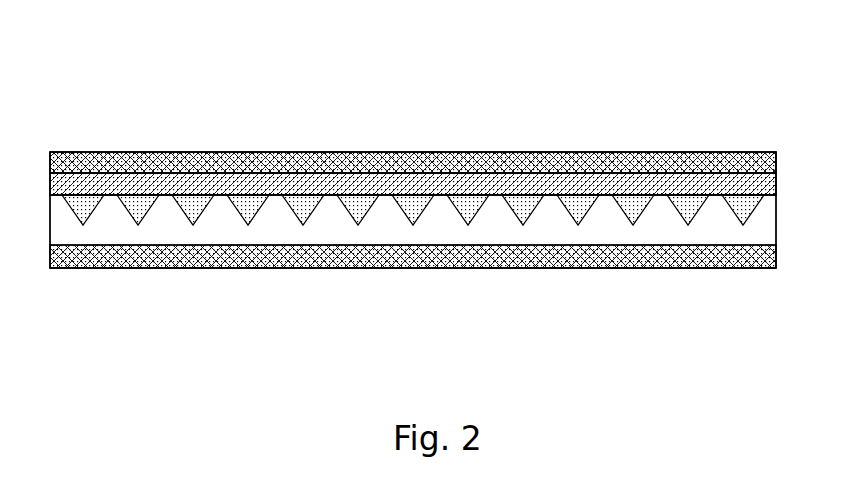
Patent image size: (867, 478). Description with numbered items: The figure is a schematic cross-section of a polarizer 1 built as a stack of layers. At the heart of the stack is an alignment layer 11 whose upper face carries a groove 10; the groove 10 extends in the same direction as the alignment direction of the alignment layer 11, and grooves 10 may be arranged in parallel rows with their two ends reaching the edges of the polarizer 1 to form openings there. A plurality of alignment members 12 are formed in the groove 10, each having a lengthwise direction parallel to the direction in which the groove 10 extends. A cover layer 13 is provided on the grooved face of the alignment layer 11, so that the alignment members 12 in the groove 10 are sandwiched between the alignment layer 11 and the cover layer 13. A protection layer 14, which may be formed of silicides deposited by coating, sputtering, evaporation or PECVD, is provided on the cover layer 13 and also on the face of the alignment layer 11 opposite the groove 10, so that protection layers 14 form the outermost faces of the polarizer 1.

The polarizer 1 is at (215, 102).
The groove 10 is at (413, 257).
The alignment layer 11 is at (550, 222).
The alignment member 12 is at (685, 208).
The cover layer 13 is at (577, 187).
The protection layer 14 is at (645, 168).